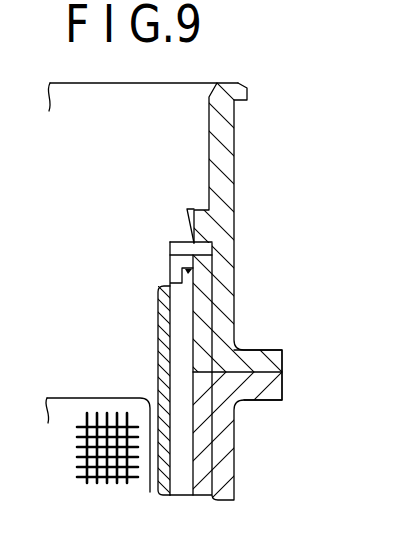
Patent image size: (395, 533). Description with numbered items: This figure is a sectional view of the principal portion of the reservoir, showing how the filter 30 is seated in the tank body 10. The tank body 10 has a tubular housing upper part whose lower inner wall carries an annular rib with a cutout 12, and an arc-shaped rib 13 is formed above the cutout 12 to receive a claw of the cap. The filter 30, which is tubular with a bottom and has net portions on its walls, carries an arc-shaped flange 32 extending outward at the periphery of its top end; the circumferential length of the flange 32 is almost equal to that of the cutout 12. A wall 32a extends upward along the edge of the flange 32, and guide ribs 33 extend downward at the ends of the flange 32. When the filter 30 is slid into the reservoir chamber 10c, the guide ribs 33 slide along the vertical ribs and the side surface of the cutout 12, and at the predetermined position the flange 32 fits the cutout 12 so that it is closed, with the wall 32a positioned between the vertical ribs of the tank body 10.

The tank body 10 is at (234, 129).
The reservoir chamber 10c is at (200, 406).
The cutout 12 is at (201, 288).
The arc-shaped rib 13 is at (200, 221).
The filter 30 is at (170, 440).
The flange 32 is at (196, 330).
The wall 32a is at (195, 276).
The guide rib 33 is at (283, 352).